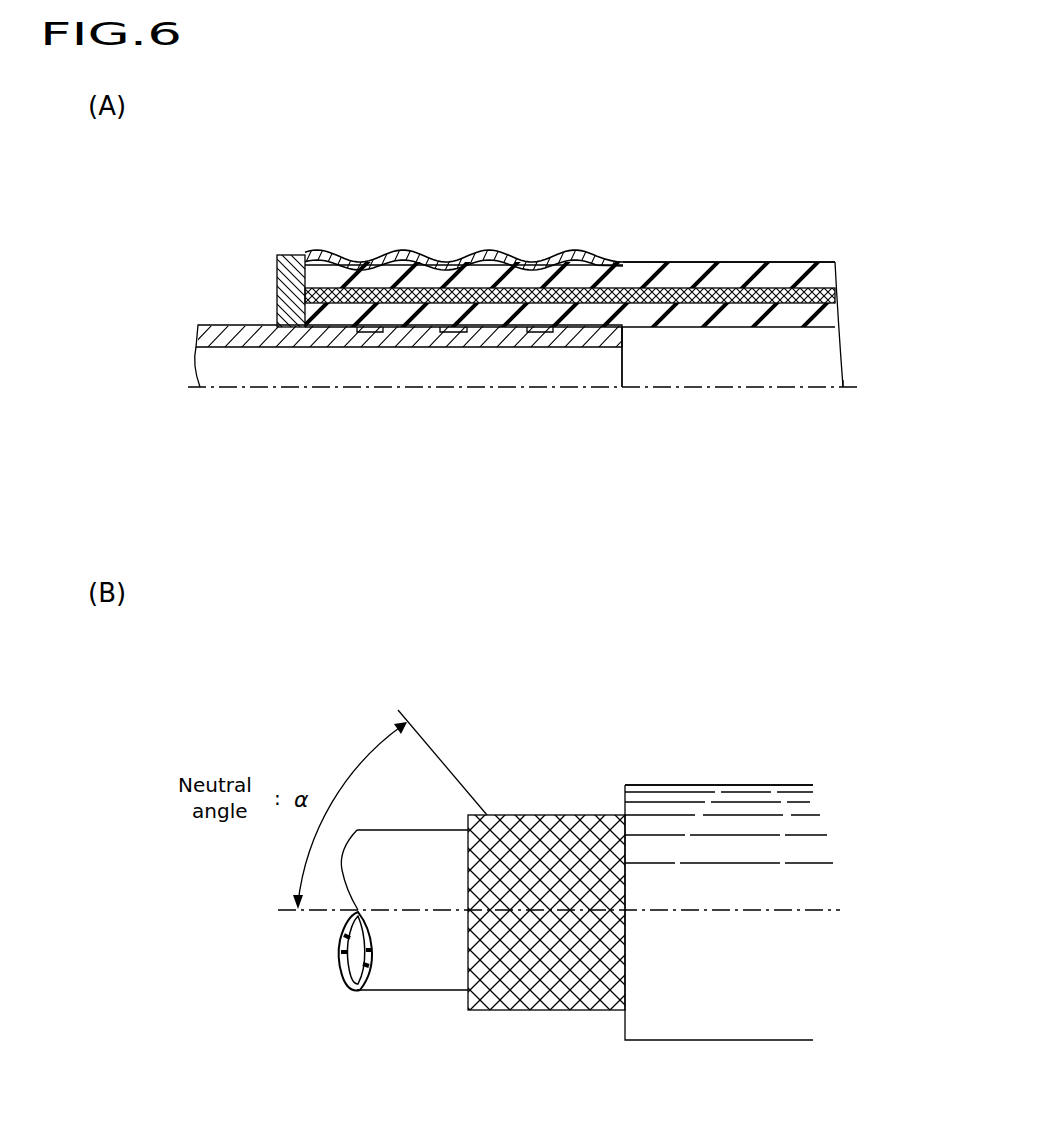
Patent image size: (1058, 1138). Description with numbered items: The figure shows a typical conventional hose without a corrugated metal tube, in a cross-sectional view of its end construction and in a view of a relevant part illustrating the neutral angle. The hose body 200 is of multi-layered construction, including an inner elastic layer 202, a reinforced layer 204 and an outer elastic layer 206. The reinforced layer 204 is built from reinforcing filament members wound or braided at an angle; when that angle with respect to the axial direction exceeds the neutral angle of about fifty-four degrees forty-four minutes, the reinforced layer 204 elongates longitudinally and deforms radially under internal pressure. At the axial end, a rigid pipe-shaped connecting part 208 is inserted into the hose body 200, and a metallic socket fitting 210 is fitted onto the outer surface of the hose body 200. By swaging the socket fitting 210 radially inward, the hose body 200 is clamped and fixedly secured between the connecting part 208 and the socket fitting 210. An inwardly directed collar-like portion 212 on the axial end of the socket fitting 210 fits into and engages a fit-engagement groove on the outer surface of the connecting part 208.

The hose body 200 is at (694, 212).
The inner elastic layer 202 is at (802, 318).
The reinforced layer 204 is at (838, 292).
The outer elastic layer 206 is at (765, 268).
The connecting part 208 is at (228, 317).
The socket fitting 210 is at (433, 244).
The collar-like portion 212 is at (277, 283).